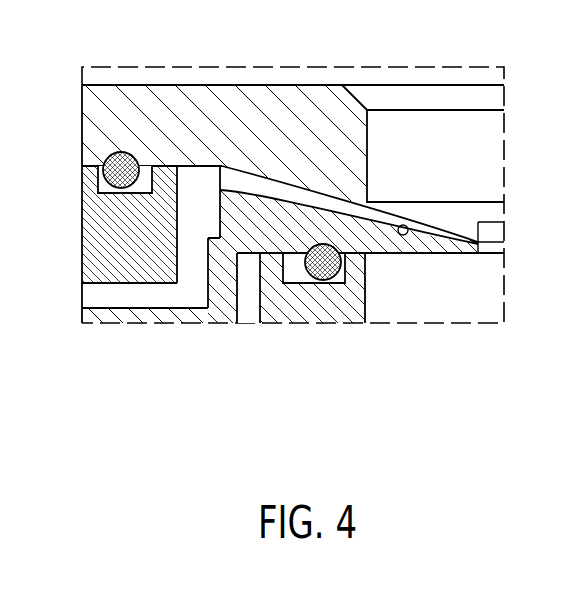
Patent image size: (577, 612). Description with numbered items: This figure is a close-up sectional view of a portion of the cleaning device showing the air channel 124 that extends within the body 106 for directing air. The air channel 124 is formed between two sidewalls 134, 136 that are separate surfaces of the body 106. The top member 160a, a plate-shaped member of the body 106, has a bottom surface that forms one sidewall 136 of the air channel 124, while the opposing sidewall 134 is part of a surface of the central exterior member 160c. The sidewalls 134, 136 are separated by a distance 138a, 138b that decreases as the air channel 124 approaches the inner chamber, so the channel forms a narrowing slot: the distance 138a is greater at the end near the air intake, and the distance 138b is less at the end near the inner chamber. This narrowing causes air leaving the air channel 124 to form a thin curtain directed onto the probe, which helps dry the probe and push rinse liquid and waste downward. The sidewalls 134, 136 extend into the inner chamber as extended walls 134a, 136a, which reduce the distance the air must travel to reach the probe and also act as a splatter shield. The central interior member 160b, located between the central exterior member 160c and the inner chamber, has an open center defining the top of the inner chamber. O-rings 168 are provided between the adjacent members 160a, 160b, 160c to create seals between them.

The body 106 is at (488, 250).
The air channel 124 is at (270, 185).
The sidewall 134 is at (403, 236).
The extended wall 134a is at (448, 252).
The sidewall 136 is at (303, 212).
The extended wall 136a is at (438, 224).
The distance 138a is at (236, 190).
The distance 138b is at (480, 238).
The top member 160a is at (232, 87).
The central interior member 160b is at (291, 312).
The central exterior member 160c is at (163, 178).
The O-ring 168 is at (115, 168).